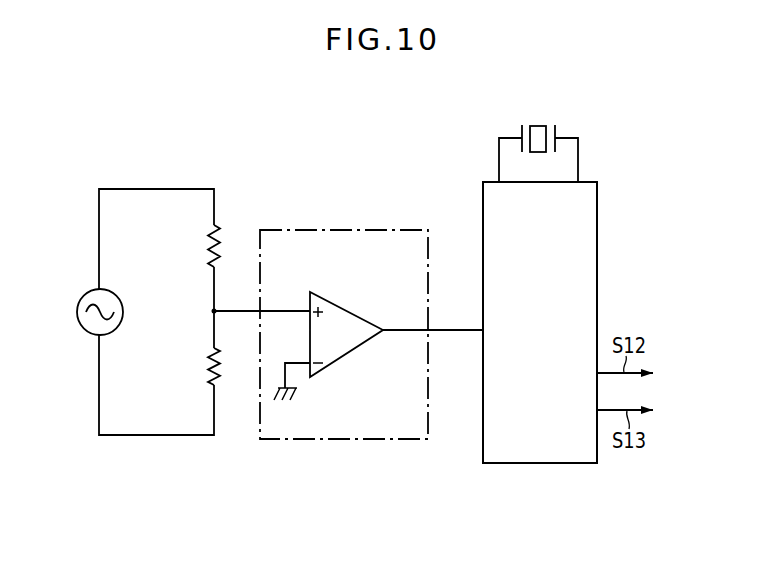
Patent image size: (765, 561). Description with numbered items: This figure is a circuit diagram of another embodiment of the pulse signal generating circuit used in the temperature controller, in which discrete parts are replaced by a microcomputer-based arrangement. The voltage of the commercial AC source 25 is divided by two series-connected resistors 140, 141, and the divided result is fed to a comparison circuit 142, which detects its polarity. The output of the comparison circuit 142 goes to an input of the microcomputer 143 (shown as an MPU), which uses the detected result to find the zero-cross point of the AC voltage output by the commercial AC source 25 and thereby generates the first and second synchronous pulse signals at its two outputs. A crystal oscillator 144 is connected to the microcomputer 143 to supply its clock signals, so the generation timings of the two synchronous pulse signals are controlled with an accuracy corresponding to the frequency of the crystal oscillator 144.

The commercial AC source 25 is at (84, 297).
The resistor 140 is at (222, 242).
The resistor 141 is at (220, 386).
The comparison circuit 142 is at (346, 228).
The microcomputer 143 is at (504, 464).
The crystal oscillator 144 is at (556, 128).